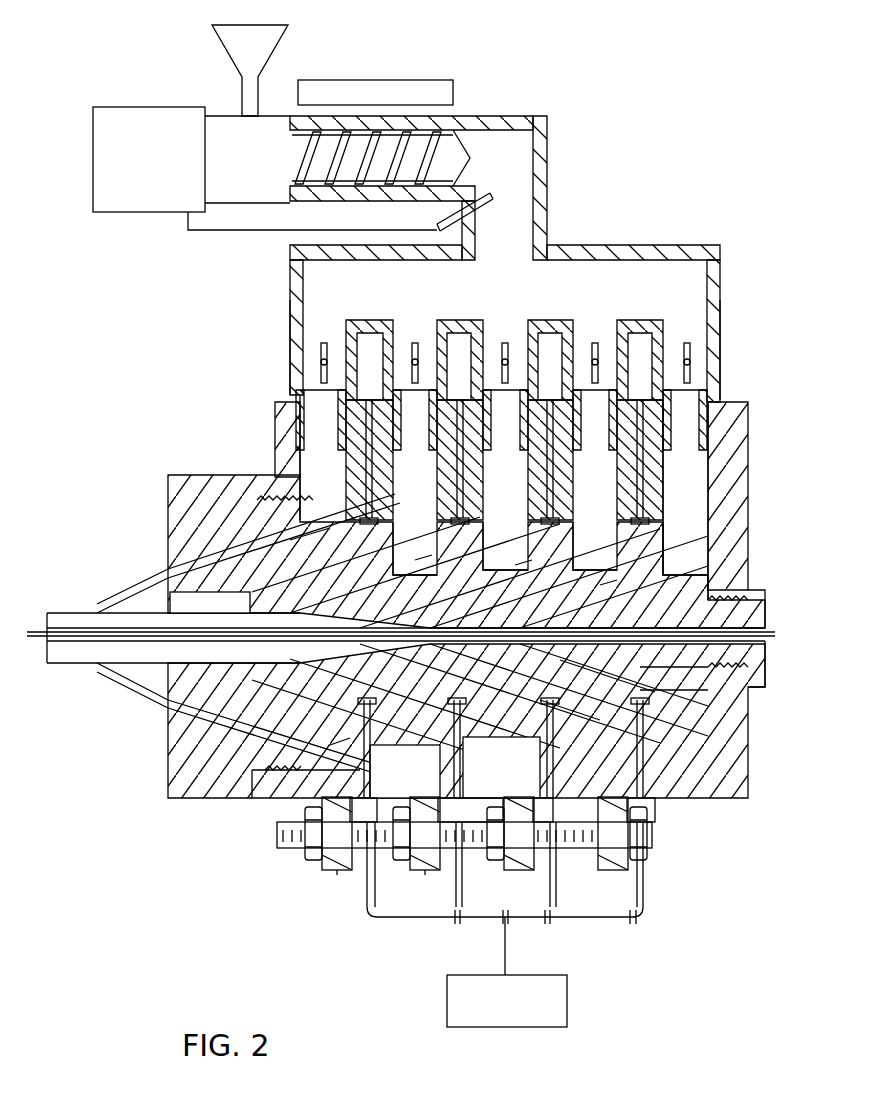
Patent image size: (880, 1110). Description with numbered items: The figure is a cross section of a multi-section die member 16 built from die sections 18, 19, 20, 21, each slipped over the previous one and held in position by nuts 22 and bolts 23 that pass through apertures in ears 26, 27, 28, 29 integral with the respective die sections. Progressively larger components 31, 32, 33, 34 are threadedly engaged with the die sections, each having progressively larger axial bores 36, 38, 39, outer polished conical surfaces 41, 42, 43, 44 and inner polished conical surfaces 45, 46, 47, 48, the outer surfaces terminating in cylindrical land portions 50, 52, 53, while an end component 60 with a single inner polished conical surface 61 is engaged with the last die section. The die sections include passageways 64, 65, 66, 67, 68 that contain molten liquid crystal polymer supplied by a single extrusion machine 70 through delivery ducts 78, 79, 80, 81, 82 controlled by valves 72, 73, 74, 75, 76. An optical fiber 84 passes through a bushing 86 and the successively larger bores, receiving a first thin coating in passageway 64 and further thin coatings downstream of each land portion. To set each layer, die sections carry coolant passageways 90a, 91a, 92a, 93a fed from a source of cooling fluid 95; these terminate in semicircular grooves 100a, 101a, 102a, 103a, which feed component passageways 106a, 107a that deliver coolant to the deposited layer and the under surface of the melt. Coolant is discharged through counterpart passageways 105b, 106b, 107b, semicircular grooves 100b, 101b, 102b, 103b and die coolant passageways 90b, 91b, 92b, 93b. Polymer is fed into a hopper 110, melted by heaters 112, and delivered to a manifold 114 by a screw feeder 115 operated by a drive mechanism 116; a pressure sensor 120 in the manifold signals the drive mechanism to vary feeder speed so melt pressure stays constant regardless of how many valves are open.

The hopper 110 is at (236, 47).
The extrusion machine 70 is at (352, 53).
The heaters 112 is at (413, 80).
The drive mechanism 116 is at (118, 212).
The screw feeder 115 is at (457, 160).
The pressure sensor 120 is at (490, 204).
The manifold 114 is at (598, 262).
The delivery duct 82 is at (290, 352).
The delivery duct 78 is at (722, 352).
The delivery duct 81 is at (452, 384).
The delivery duct 80 is at (545, 381).
The delivery duct 79 is at (640, 381).
The valve 76 is at (324, 343).
The valve 75 is at (415, 343).
The valve 74 is at (505, 343).
The valve 73 is at (595, 343).
The valve 72 is at (687, 343).
The passageway 67 is at (394, 419).
The passageway 66 is at (497, 429).
The passageway 65 is at (587, 429).
The passageway 68 is at (293, 430).
The passageway 64 is at (690, 450).
The end component 60 is at (168, 522).
The inner polished conical surface 61 is at (250, 540).
The die section 18 is at (726, 790).
The die section 21 is at (250, 793).
The component 34 is at (160, 617).
The cylindrical land portion 53 is at (165, 577).
The fluid passageway 107b is at (266, 570).
The cylindrical land portion 52 is at (245, 603).
The fluid passageway 106b is at (345, 597).
The fluid passageway 105b is at (455, 604).
The cylindrical land portion 50 is at (505, 616).
The axial bore 36 is at (575, 608).
The outer polished conical surface 44 is at (331, 745).
The semicircular groove 103b is at (381, 526).
The semicircular groove 102b is at (476, 536).
The semicircular groove 101b is at (570, 541).
The semicircular groove 100b is at (665, 576).
The die coolant passageway 93b is at (370, 458).
The die coolant passageway 92b is at (462, 479).
The die coolant passageway 91b is at (560, 478).
The die coolant passageway 90b is at (640, 498).
The component 33 is at (420, 560).
The component 32 is at (520, 563).
The component 31 is at (606, 584).
The optical fiber 84 is at (776, 637).
The bushing 86 is at (760, 668).
The axial bore 39 is at (140, 672).
The axial bore 38 is at (160, 690).
The coolant passageway 107a is at (180, 712).
The coolant passageway 106a is at (190, 760).
The outer polished conical surface 43 is at (395, 720).
The inner polished conical surface 48 is at (376, 745).
The outer polished conical surface 42 is at (490, 705).
The inner polished conical surface 47 is at (470, 722).
The outer polished conical surface 41 is at (595, 686).
The inner polished conical surface 46 is at (560, 704).
The inner polished conical surface 45 is at (655, 692).
The semicircular groove 100a is at (655, 705).
The semicircular groove 101a is at (575, 730).
The semicircular groove 102a is at (465, 738).
The semicircular groove 103a is at (385, 768).
The coolant passageway 93a is at (372, 792).
The coolant passageway 92a is at (462, 782).
The coolant passageway 91a is at (552, 782).
The coolant passageway 90a is at (645, 770).
The bolts 23 is at (277, 840).
The nuts 22 is at (652, 852).
The die section 20 is at (390, 792).
The die section 19 is at (466, 840).
The ear 27 is at (533, 870).
The ear 26 is at (625, 870).
The ear 29 is at (340, 870).
The ear 28 is at (418, 870).
The multi-section die member 16 is at (113, 857).
The source of cooling fluid 95 is at (567, 1018).